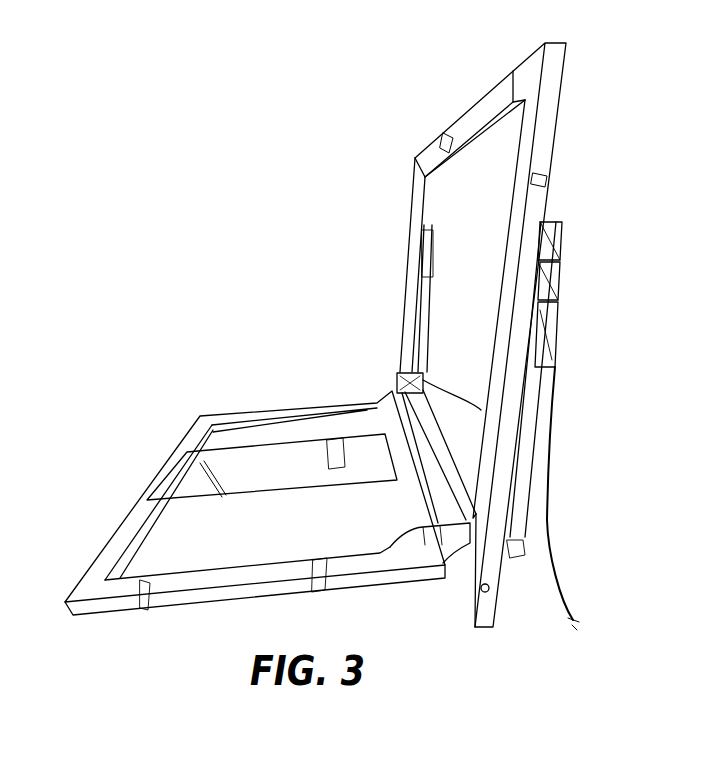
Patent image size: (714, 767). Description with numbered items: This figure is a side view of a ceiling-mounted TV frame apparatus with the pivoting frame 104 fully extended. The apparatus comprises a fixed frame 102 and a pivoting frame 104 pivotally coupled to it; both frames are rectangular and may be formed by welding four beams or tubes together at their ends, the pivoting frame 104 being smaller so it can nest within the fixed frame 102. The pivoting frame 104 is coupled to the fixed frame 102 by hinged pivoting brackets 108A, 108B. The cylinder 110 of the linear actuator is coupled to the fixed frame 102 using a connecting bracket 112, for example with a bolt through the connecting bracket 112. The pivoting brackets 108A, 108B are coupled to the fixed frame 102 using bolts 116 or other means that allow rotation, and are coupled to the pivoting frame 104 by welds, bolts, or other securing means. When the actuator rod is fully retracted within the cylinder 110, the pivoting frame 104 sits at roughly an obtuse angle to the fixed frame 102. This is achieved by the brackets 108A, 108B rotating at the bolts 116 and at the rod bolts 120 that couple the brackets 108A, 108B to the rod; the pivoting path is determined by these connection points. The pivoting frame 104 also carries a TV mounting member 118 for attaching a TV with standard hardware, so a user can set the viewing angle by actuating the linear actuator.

The fixed frame 102 is at (546, 132).
The pivoting frame 104 is at (108, 607).
The pivoting bracket 108A is at (412, 557).
The pivoting bracket 108B is at (397, 383).
The cylinder 110 is at (420, 313).
The connecting bracket 112 is at (550, 252).
The bolt 116 is at (492, 592).
The TV mounting member 118 is at (187, 480).
The rod bolt 120 is at (515, 560).